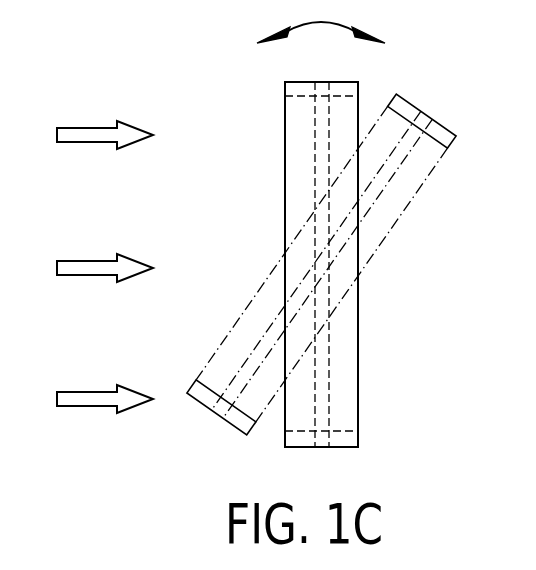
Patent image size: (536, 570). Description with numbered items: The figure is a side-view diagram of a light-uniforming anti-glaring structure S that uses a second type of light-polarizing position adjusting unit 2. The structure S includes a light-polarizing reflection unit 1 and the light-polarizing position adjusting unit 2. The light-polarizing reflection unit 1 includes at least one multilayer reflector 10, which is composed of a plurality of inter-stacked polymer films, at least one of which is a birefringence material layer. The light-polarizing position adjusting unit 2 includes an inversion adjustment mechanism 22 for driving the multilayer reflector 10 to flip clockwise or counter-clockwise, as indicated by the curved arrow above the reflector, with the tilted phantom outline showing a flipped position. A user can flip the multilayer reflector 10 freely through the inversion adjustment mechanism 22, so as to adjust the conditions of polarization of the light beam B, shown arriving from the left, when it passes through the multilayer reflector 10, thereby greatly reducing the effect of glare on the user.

The light-polarizing reflection unit 1 is at (378, 264).
The multilayer reflector 10 is at (327, 378).
The light-polarizing position adjusting unit 2 is at (383, 241).
The inversion adjustment mechanism 22 is at (337, 84).
The light beam B is at (100, 127).
The light-uniforming anti-glaring structure S is at (78, 20).